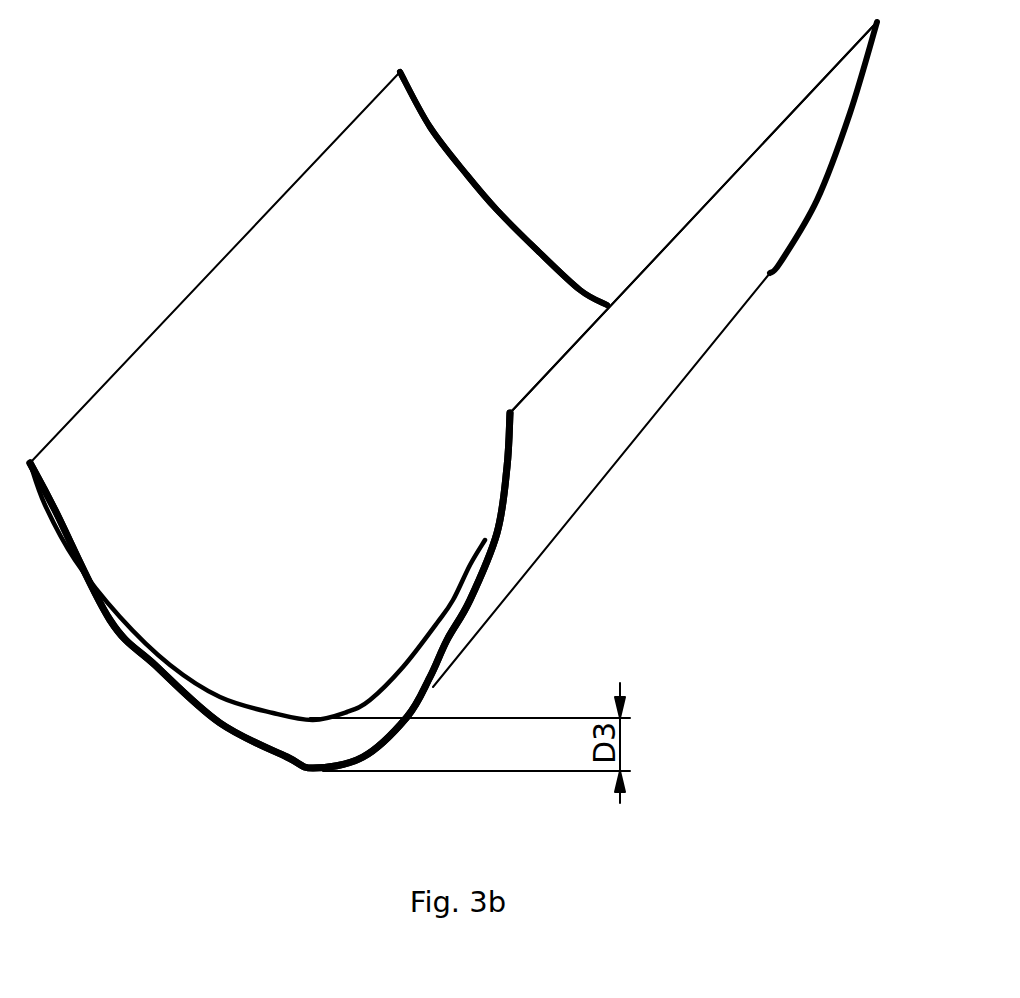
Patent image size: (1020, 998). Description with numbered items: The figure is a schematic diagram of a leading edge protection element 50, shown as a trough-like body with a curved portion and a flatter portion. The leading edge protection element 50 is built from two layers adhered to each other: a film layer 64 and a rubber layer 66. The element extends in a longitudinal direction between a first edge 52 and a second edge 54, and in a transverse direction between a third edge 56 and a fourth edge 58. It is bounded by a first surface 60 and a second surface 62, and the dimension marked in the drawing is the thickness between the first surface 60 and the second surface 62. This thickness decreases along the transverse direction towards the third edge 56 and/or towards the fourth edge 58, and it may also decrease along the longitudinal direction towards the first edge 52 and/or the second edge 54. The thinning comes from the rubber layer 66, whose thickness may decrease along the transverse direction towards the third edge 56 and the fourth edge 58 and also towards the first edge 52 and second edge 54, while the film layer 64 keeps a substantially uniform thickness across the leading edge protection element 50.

The leading edge protection element 50 is at (453, 446).
The first edge 52 is at (430, 695).
The second edge 54 is at (497, 210).
The third edge 56 is at (310, 168).
The fourth edge 58 is at (658, 247).
The first surface 60 is at (680, 337).
The second surface 62 is at (433, 163).
The film layer 64 is at (227, 737).
The rubber layer 66 is at (293, 737).